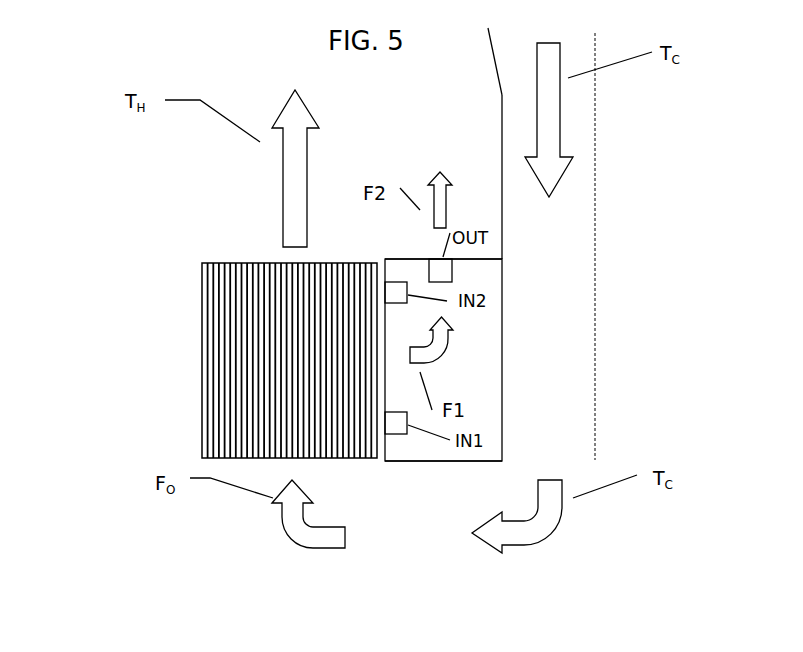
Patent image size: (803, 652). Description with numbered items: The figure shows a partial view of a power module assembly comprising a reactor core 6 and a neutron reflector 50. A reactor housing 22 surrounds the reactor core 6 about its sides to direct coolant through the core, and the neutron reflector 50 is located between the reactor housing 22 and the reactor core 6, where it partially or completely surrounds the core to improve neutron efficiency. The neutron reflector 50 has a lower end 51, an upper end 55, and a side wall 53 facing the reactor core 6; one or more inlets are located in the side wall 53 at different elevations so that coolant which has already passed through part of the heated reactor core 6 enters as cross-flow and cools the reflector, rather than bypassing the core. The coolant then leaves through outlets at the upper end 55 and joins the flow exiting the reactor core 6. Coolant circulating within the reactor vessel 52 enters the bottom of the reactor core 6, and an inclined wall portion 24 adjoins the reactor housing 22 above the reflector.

The reactor core 6 is at (178, 302).
The reactor housing 22 is at (503, 237).
The inclined wall portion 24 is at (473, 78).
The neutron reflector 50 is at (473, 365).
The lower end 51 is at (447, 477).
The reactor vessel 52 is at (605, 400).
The side wall 53 is at (393, 363).
The upper end 55 is at (408, 252).